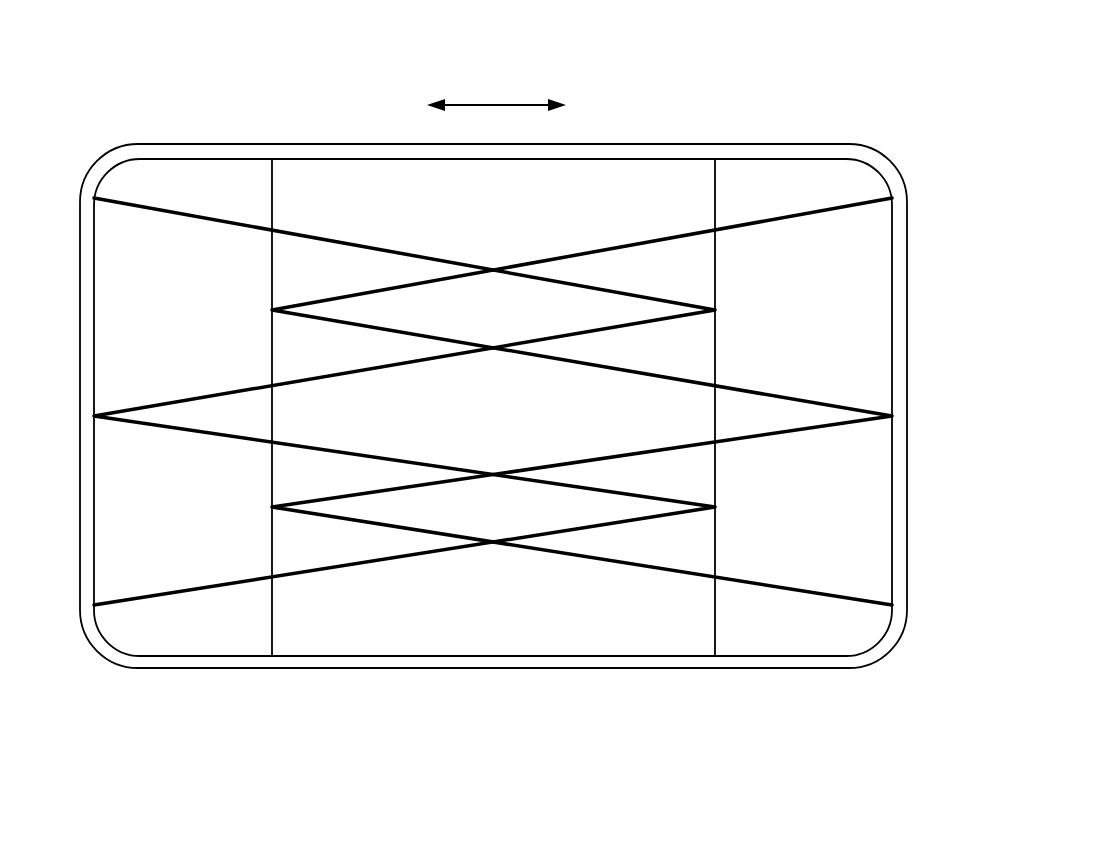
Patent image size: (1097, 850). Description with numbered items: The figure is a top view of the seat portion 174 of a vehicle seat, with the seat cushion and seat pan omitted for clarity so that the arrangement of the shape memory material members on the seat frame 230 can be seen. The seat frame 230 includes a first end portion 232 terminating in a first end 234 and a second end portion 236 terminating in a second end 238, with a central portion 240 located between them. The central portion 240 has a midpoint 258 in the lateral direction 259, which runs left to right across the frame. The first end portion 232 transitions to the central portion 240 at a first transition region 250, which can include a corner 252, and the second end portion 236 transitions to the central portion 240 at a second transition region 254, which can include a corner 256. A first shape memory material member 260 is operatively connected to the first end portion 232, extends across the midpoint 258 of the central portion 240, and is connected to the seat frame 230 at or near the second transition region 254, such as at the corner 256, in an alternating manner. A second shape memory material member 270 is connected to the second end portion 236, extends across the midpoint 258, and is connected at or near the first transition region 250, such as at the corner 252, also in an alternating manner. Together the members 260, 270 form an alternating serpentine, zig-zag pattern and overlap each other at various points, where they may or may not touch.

The seat portion 174 is at (133, 87).
The seat frame 230 is at (345, 131).
The first end portion 232 is at (227, 180).
The first end 234 is at (80, 195).
The second end portion 236 is at (808, 176).
The second end 238 is at (907, 232).
The central portion 240 is at (594, 170).
The first transition region 250 is at (305, 688).
The corner 252 is at (310, 615).
The second transition region 254 is at (684, 694).
The corner 256 is at (683, 618).
The midpoint 258 is at (495, 689).
The lateral direction 259 is at (513, 100).
The first shape memory material member 260 is at (180, 595).
The second shape memory material member 270 is at (843, 605).